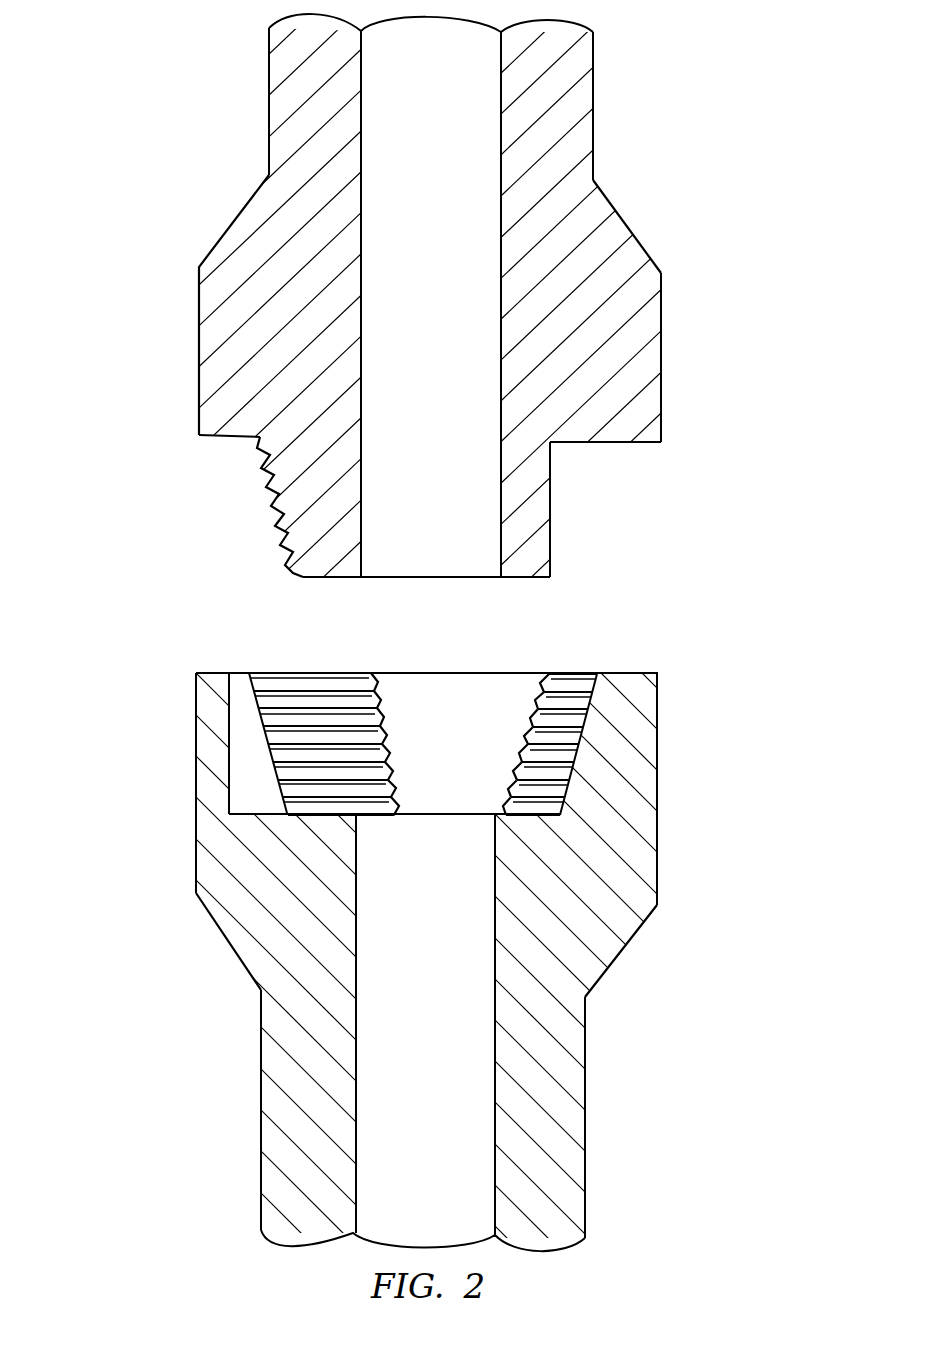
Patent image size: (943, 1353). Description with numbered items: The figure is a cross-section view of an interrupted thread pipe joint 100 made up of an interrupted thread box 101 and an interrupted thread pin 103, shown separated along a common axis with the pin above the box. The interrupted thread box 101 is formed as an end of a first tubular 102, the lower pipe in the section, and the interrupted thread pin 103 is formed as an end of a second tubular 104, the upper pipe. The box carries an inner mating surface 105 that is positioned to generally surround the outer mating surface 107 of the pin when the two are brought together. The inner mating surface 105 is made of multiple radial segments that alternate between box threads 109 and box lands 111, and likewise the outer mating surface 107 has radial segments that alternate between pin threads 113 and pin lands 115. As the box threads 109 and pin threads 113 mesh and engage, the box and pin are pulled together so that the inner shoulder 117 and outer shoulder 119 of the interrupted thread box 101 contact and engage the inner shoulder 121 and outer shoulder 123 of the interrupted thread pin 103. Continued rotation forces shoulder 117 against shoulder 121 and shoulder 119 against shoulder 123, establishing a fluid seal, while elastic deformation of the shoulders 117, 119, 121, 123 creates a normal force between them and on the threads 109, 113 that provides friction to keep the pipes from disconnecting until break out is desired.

The interrupted thread pipe joint 100 is at (143, 557).
The interrupted thread box 101 is at (153, 840).
The first tubular 102 is at (227, 1150).
The interrupted thread pin 103 is at (172, 333).
The second tubular 104 is at (247, 82).
The inner mating surface 105 is at (474, 706).
The outer mating surface 107 is at (570, 503).
The box threads 109 is at (292, 673).
The box lands 111 is at (233, 738).
The pin threads 113 is at (264, 475).
The pin lands 115 is at (552, 460).
The inner shoulder 117 is at (277, 815).
The outer shoulder 119 is at (220, 673).
The inner shoulder 121 is at (327, 578).
The outer shoulder 123 is at (236, 437).